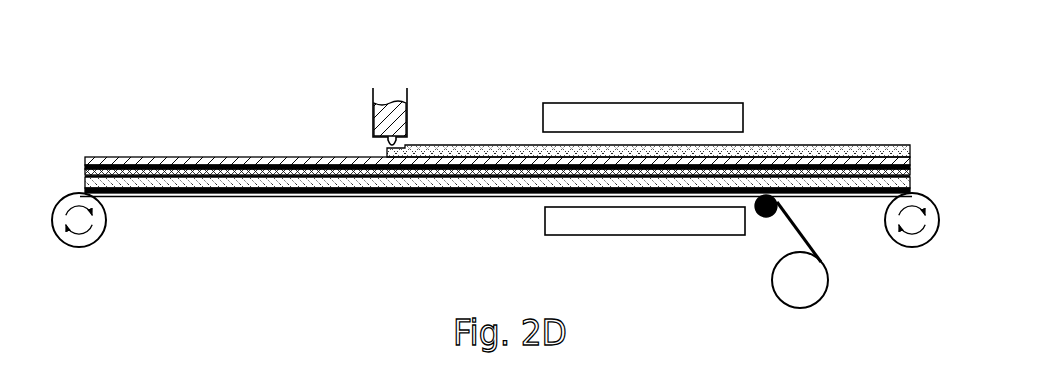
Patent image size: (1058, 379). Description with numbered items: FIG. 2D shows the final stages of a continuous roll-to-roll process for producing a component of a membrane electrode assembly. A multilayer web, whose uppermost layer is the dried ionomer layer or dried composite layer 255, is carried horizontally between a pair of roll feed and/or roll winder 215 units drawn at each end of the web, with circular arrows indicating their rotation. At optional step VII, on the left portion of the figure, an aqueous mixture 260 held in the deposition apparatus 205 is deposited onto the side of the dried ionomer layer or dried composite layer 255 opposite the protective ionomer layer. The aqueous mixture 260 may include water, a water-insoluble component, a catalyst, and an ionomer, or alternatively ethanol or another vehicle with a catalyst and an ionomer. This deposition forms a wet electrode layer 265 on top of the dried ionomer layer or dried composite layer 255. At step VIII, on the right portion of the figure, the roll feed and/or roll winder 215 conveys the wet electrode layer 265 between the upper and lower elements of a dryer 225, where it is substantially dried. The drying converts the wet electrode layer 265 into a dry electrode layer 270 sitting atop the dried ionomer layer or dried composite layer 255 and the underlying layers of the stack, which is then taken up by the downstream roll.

The deposition apparatus 205 is at (394, 96).
The roll feed and/or roll winder 215 is at (72, 175).
The dryer 225 is at (683, 101).
The dried ionomer layer or dried composite layer 255 is at (197, 163).
The aqueous mixture 260 is at (394, 121).
The wet electrode layer 265 is at (488, 146).
The dry electrode layer 270 is at (821, 146).
The optional step VII is at (166, 101).
The step VIII is at (784, 88).